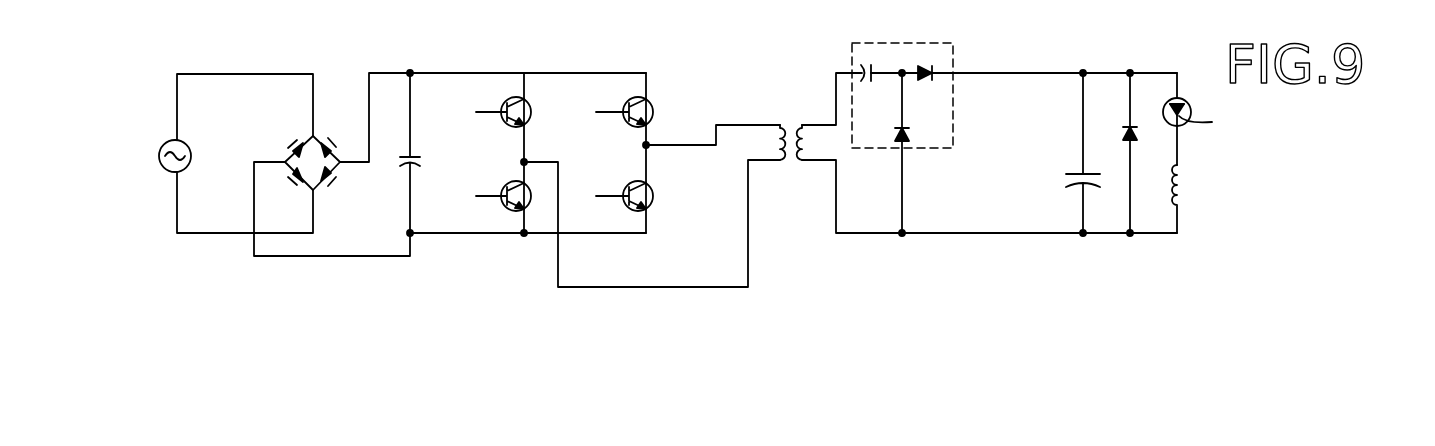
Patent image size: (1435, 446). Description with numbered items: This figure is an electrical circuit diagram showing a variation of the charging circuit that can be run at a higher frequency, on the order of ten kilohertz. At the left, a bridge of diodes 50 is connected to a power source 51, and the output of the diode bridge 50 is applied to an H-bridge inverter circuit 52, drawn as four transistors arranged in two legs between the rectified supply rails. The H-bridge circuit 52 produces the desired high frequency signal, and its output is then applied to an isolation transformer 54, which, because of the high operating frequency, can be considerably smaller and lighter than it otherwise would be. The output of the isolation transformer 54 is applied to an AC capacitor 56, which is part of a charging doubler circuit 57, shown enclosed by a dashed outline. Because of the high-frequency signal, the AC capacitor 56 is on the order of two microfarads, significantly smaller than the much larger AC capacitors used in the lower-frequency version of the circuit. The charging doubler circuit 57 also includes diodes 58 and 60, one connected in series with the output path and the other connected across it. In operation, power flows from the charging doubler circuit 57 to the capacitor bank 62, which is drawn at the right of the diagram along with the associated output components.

The bridge of diodes 50 is at (336, 135).
The power source 51 is at (190, 150).
The H-bridge inverter circuit 52 is at (658, 61).
The isolation transformer 54 is at (784, 163).
The AC capacitor 56 is at (878, 81).
The charging doubler circuit 57 is at (851, 62).
The diode 58 is at (906, 137).
The diode 60 is at (926, 79).
The capacitor bank 62 is at (1078, 173).